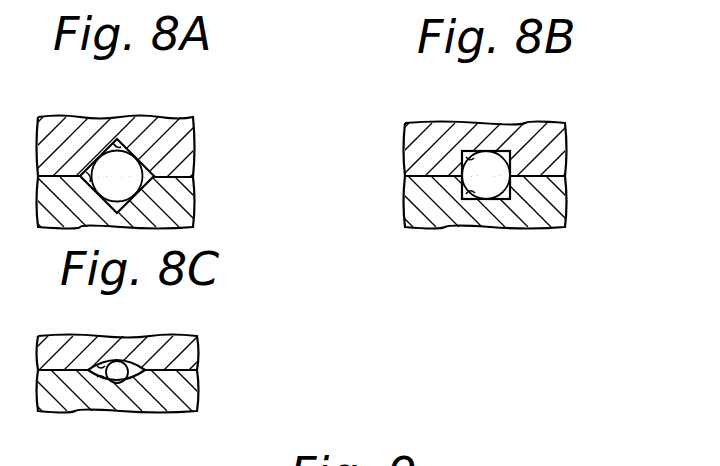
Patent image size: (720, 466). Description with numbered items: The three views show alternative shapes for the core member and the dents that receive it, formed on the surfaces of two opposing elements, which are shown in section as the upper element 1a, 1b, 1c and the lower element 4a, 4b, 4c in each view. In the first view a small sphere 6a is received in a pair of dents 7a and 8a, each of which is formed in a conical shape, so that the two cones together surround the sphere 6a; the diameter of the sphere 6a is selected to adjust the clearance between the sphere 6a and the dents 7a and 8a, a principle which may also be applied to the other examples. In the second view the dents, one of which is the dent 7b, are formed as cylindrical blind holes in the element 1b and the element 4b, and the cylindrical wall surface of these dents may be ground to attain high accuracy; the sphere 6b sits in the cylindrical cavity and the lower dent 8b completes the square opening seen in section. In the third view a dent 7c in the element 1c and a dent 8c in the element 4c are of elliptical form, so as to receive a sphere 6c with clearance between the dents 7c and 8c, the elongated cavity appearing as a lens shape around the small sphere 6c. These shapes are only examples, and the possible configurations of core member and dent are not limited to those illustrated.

In FIG. 8A, the upper member 1a is at (188, 157).
In FIG. 8A, the lower member 4a is at (188, 197).
In FIG. 8A, the small sphere 6a is at (127, 181).
In FIG. 8A, the dent 7a is at (121, 142).
In FIG. 8A, the dent 8a is at (92, 182).
In FIG. 8B, the upper member 1b is at (555, 142).
In FIG. 8B, the lower member 4b is at (550, 208).
In FIG. 8B, the optical fiber 6b is at (487, 160).
In FIG. 8B, the dent 7b is at (474, 160).
In FIG. 8B, the gap 8b is at (477, 190).
In FIG. 8C, the upper member 1c is at (190, 348).
In FIG. 8C, the lower member 4c is at (187, 382).
In FIG. 8C, the sphere 6c is at (123, 378).
In FIG. 8C, the dent 7c is at (100, 366).
In FIG. 8C, the dent 8c is at (100, 380).